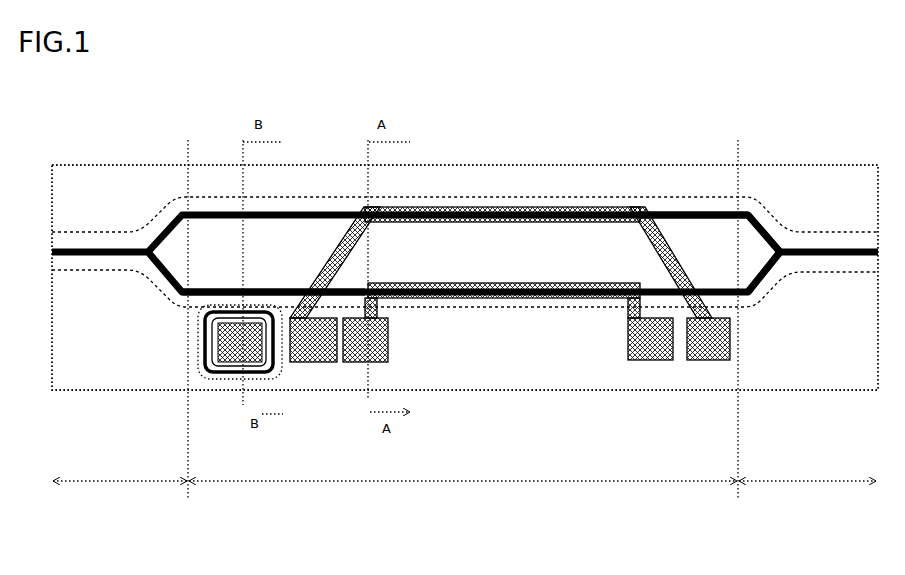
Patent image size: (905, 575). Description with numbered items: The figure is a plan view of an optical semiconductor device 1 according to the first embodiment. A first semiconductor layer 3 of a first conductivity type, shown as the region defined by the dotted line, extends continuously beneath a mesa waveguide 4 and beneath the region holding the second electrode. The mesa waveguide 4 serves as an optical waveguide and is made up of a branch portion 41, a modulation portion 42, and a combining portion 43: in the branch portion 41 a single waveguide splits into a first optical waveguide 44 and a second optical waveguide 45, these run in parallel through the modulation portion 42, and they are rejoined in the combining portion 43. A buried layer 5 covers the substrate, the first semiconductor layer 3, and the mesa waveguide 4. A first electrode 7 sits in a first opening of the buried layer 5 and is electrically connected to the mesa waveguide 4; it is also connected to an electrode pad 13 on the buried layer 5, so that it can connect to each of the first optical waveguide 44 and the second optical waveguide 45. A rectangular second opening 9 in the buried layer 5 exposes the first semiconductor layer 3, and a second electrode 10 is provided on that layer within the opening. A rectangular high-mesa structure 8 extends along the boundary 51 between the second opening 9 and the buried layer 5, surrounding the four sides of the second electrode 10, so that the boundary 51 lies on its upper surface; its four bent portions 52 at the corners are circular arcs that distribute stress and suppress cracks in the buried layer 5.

The optical semiconductor device 1 is at (792, 130).
The first semiconductor layer 3 is at (550, 200).
The mesa waveguide 4 is at (95, 230).
The buried layer 5 is at (592, 355).
The first electrode 7 is at (462, 207).
The mesa structure 8 is at (231, 289).
The second opening 9 is at (203, 362).
The second electrode 10 is at (198, 372).
The electrode pad 13 is at (363, 362).
The branch portion 41 is at (128, 484).
The modulation portion 42 is at (478, 484).
The combining portion 43 is at (813, 484).
The first optical waveguide 44 is at (665, 197).
The second optical waveguide 45 is at (738, 284).
The boundary 51 is at (278, 348).
The bent portion 52 is at (268, 300).